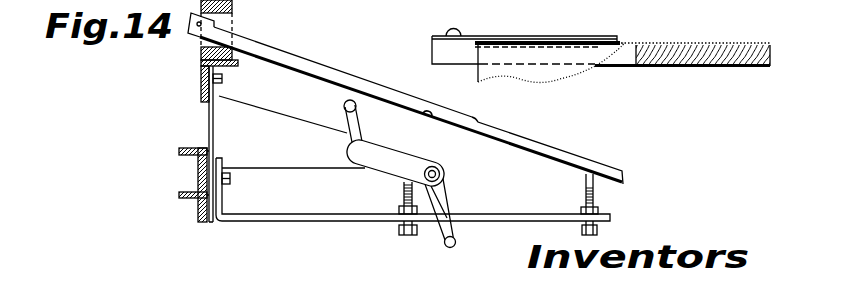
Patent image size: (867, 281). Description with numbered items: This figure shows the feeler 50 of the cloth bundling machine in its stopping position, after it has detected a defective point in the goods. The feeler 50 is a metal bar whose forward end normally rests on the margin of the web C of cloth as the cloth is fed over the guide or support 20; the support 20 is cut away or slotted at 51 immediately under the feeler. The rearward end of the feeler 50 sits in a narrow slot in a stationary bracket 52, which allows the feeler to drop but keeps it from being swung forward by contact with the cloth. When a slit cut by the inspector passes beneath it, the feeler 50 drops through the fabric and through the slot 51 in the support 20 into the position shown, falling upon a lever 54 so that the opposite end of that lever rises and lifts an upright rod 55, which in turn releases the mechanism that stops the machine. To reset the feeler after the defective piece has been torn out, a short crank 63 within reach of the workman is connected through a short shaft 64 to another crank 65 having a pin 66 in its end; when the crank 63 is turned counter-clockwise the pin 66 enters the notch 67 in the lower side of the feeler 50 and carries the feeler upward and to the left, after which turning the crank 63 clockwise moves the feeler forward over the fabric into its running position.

The feeler 50 is at (362, 58).
The stationary bracket 52 is at (232, 21).
The upright rod 55 is at (196, 28).
The short crank 63 is at (341, 112).
The short shaft 64 is at (357, 154).
The crank 65 is at (452, 193).
The pin 66 is at (448, 248).
The notch 67 is at (428, 113).
The lever 54 is at (594, 182).
The slot 51 is at (626, 58).
The guide or support 20 is at (716, 66).
The web of cloth C is at (717, 42).